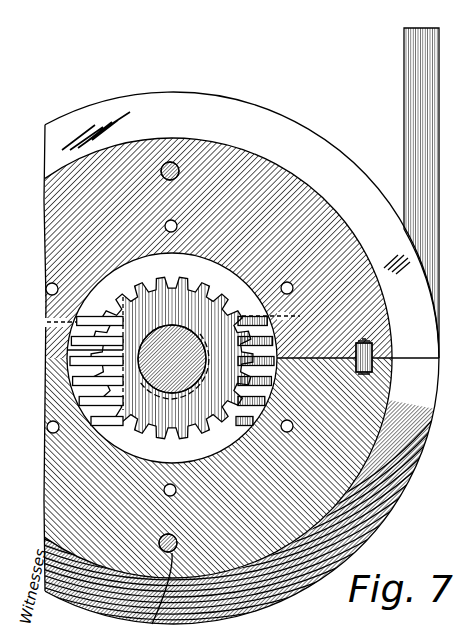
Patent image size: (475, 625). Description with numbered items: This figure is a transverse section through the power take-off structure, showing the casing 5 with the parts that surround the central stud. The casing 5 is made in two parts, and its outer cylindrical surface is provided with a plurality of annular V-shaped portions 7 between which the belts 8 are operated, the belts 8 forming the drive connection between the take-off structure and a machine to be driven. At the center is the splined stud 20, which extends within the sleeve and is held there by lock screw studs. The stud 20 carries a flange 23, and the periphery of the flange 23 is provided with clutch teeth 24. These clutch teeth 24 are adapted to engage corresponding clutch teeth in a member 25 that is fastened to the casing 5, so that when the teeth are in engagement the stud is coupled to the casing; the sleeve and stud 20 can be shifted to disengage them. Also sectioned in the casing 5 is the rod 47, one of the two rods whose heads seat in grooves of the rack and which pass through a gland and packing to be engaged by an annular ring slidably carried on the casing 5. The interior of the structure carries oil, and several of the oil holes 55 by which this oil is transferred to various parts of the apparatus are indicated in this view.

The casing 5 is at (397, 384).
The annular V-shaped portions 7 is at (352, 212).
The belts 8 is at (433, 204).
The splined stud 20 is at (172, 325).
The flange 23 is at (67, 350).
The clutch teeth 24 is at (62, 377).
The member 25 is at (70, 323).
The rod 47 is at (176, 163).
The oil holes 55 is at (136, 294).